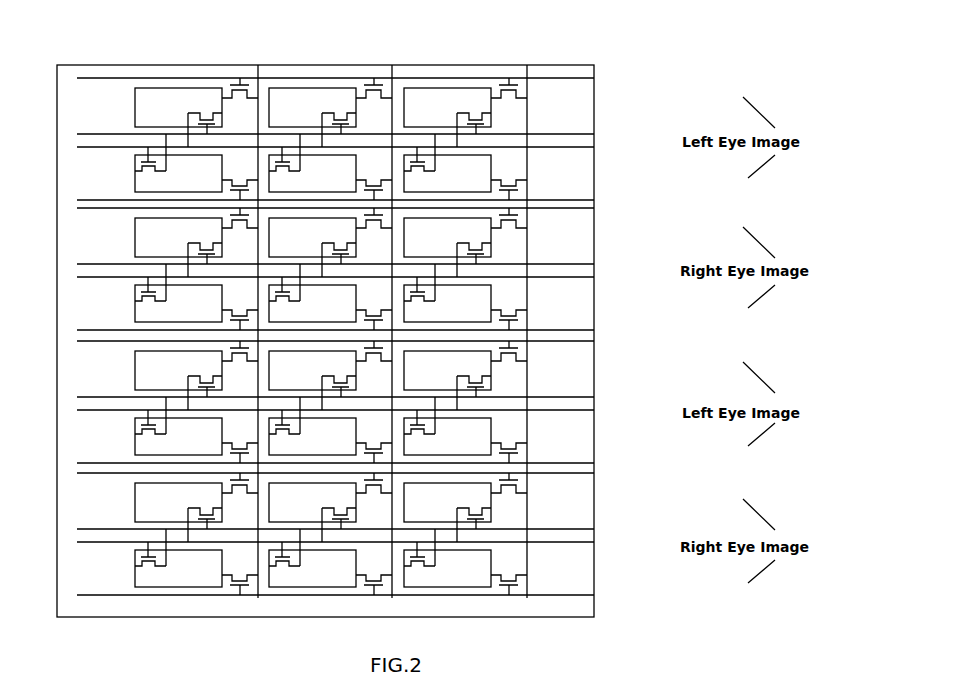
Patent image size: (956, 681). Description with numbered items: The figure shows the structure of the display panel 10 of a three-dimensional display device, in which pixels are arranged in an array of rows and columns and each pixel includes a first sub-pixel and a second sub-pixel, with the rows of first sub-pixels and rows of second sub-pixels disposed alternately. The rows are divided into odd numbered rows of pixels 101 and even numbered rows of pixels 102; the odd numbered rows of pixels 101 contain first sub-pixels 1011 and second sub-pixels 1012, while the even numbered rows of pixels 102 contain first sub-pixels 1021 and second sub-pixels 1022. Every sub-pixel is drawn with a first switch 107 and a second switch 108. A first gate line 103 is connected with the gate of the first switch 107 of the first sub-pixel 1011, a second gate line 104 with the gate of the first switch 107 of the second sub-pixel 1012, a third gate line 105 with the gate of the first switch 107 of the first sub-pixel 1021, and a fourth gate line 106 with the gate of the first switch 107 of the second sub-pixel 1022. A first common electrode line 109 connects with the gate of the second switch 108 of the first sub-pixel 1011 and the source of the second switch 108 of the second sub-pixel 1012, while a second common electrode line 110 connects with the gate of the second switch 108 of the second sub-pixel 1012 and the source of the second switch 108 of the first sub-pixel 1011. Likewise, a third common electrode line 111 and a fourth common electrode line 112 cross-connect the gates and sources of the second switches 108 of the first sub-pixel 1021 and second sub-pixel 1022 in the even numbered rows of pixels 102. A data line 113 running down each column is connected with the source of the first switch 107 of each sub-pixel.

The display panel 10 is at (503, 65).
The odd numbered rows of pixels 101 is at (80, 107).
The even numbered rows of pixels 102 is at (80, 242).
The first gate line 103 is at (573, 78).
The second gate line 104 is at (573, 199).
The third gate line 105 is at (573, 209).
The fourth gate line 106 is at (573, 329).
The first switch 107 is at (373, 185).
The second switch 108 is at (148, 155).
The first common electrode line 109 is at (573, 134).
The second common electrode line 110 is at (573, 147).
The third common electrode line 111 is at (573, 264).
The fourth common electrode line 112 is at (573, 277).
The data line 113 is at (394, 88).
The first sub-pixels of the odd numbered row pixels 1011 is at (648, 110).
The second sub-pixels of the odd numbered row pixels 1012 is at (648, 172).
The first sub-pixels of the even numbered row pixels 1021 is at (648, 240).
The second sub-pixels of the even numbered row pixels 1022 is at (648, 302).